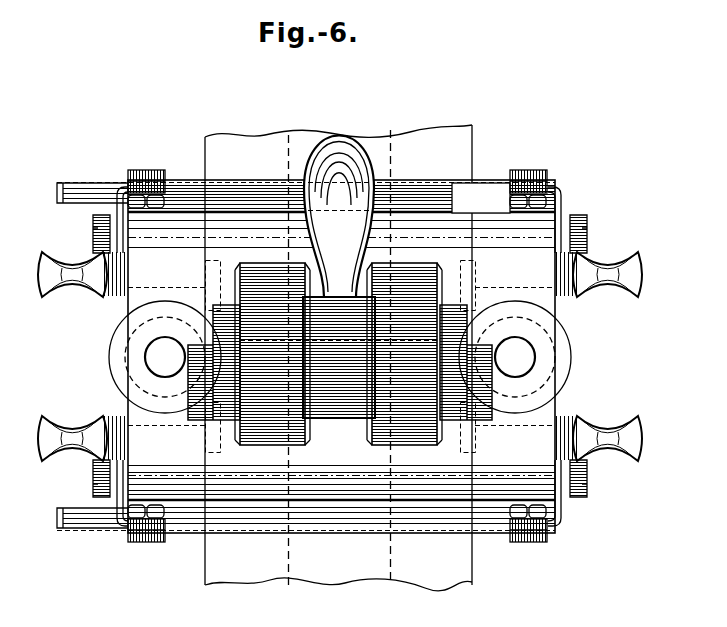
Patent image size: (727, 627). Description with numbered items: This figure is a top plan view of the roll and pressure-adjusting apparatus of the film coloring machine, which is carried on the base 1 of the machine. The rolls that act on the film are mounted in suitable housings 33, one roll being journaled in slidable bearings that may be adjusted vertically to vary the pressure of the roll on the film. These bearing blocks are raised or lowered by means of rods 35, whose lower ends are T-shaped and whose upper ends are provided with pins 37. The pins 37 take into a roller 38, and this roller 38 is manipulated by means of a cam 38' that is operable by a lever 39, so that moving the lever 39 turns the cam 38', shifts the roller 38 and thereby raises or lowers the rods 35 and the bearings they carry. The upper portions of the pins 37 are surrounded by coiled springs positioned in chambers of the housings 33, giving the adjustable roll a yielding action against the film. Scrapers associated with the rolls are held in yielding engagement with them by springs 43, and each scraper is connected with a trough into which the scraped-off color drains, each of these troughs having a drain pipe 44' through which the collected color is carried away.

The base 1 is at (250, 560).
The housings 33 is at (418, 460).
The rods 35 is at (190, 358).
The pins 37 is at (185, 384).
The roller 38 is at (338, 445).
The cam 38' is at (346, 362).
The lever 39 is at (328, 198).
The springs 43 is at (117, 190).
The drain pipe 44' is at (77, 366).